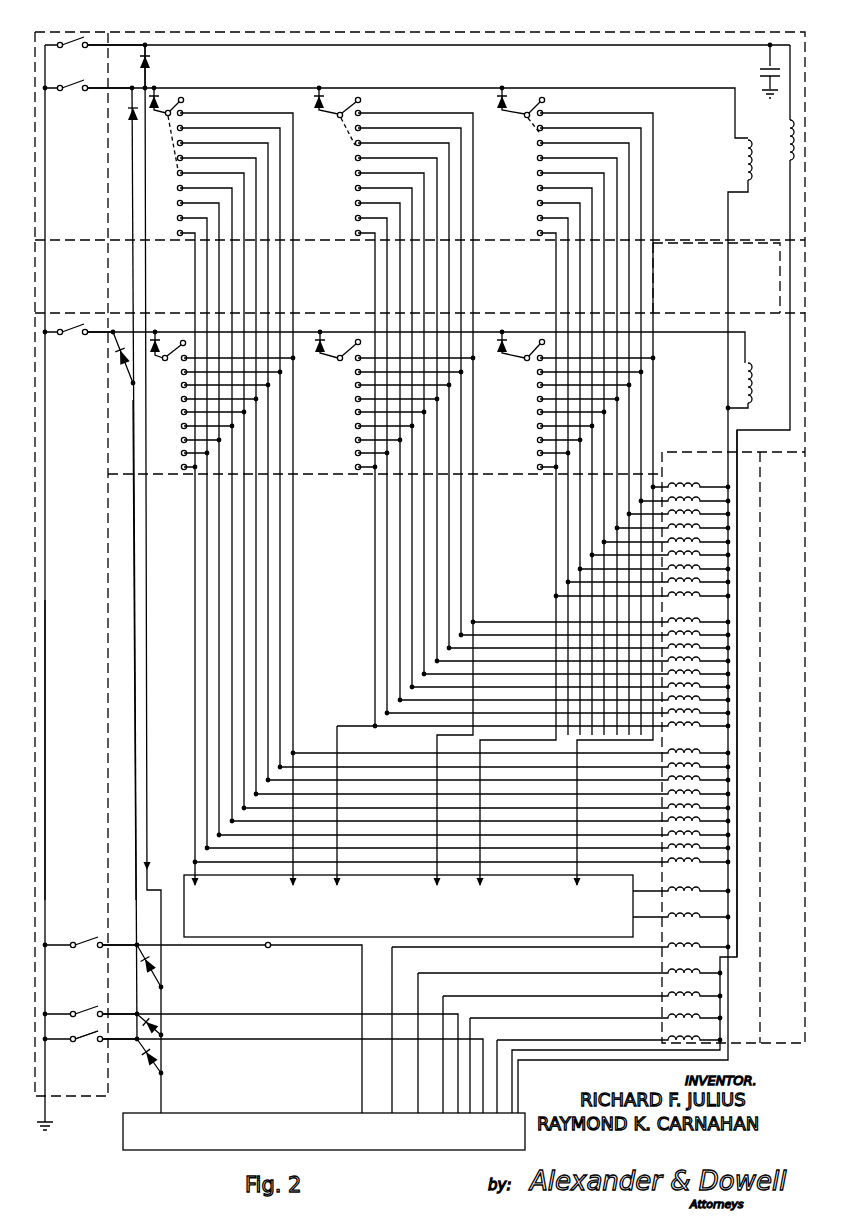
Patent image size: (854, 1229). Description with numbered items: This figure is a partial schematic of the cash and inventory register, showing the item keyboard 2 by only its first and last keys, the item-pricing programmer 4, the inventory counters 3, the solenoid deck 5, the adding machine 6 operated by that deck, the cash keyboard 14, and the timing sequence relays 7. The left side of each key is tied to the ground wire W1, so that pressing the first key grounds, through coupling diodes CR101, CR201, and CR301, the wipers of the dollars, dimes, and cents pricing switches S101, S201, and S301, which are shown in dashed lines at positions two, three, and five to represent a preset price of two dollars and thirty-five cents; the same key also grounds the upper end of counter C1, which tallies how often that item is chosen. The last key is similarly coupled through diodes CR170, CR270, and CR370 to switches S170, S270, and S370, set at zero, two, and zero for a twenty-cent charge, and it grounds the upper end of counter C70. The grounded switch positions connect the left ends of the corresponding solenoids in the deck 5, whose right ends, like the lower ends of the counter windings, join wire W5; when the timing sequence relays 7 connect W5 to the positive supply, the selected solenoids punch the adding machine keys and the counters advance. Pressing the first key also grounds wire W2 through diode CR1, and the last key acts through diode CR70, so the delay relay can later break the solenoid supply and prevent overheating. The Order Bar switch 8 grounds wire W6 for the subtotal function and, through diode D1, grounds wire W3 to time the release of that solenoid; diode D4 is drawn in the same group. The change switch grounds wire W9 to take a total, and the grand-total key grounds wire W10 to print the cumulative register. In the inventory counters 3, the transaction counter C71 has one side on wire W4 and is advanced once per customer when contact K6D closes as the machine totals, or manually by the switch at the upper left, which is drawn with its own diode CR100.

The item keyboard 2 is at (83, 498).
The inventory counters 3 is at (653, 578).
The item-pricing programmer 4 is at (595, 76).
The solenoid deck 5 is at (723, 607).
The adding machine 6 is at (787, 484).
The timing sequence relays 7 is at (488, 1141).
The Order Bar switch 8 is at (86, 1043).
The cash keyboard 14 is at (460, 933).
The ground wire W1 is at (48, 800).
The wire W2 is at (134, 688).
The wire W3 is at (148, 624).
The wire W4 is at (740, 940).
The wire W5 is at (735, 432).
The wire W6 is at (330, 1040).
The wire W9 is at (330, 1013).
The wire W10 is at (267, 950).
The diode D1 is at (141, 1058).
The diode D4 is at (140, 968).
The diode CR1 is at (131, 116).
The diode CR70 is at (123, 360).
The diode CR100 is at (164, 67).
The coupling diode CR301 is at (176, 92).
The coupling diode CR201 is at (339, 92).
The coupling diode CR101 is at (523, 92).
The coupling diode CR370 is at (169, 337).
The coupling diode CR270 is at (340, 337).
The coupling diode CR170 is at (523, 337).
The cents item-pricing switch S301 is at (165, 133).
The dimes item-pricing switch S201 is at (330, 121).
The dollars item-pricing switch S101 is at (516, 116).
The cents item-pricing switch S370 is at (166, 369).
The dimes item-pricing switch S270 is at (332, 359).
The dollars item-pricing switch S170 is at (517, 359).
The relay contact K6D is at (751, 70).
The transaction counter C71 is at (787, 142).
The counter C1 is at (742, 170).
The counter C70 is at (708, 381).